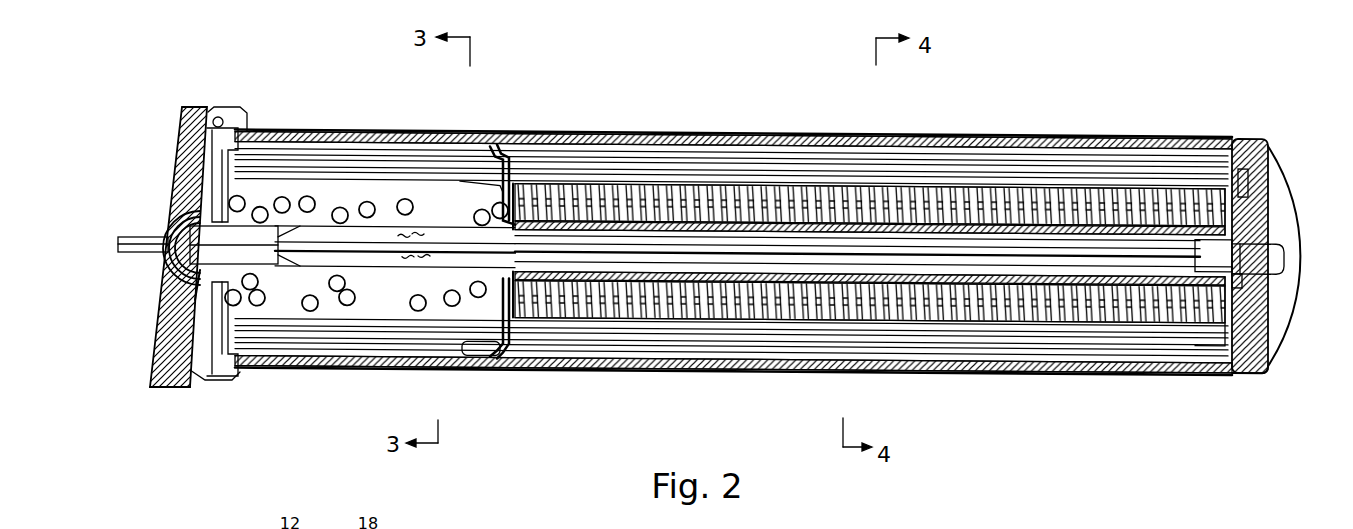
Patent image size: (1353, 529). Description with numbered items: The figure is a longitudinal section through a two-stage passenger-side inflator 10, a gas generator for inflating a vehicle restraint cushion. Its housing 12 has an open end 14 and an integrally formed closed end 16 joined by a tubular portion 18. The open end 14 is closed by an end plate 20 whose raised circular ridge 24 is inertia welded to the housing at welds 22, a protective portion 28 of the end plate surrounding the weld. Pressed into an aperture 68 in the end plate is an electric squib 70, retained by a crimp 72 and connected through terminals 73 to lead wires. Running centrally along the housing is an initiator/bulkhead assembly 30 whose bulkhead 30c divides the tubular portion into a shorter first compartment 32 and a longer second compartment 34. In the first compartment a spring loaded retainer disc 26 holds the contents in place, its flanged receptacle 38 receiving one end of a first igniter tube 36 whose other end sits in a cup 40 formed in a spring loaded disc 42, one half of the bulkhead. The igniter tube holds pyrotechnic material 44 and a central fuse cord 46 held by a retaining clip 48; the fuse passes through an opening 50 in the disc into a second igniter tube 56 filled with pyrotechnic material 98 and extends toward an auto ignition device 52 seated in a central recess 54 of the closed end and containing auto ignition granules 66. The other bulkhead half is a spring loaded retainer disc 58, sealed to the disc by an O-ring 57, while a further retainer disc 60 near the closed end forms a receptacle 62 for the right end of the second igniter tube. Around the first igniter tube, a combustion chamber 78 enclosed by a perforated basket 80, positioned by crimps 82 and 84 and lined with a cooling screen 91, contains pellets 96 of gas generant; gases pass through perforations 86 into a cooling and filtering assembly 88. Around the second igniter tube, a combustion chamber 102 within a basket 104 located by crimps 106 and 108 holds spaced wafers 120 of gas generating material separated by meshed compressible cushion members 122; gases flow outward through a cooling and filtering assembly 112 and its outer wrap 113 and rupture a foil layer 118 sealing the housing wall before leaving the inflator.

The gas generator 10 is at (663, 118).
The housing 12 is at (1022, 135).
The open end 14 is at (168, 354).
The closed end 16 is at (1254, 143).
The tubular portion 18 is at (912, 134).
The end plate 20 is at (160, 379).
The welds 22 is at (221, 118).
The raised circular ridge 24 is at (216, 132).
The spring loaded retainer disc 26 is at (245, 123).
The protective portion 28 is at (220, 380).
The initiator/bulkhead assembly 30 is at (322, 181).
The bulkhead 30c is at (474, 352).
The first cylindrical inflator compartment 32 is at (350, 150).
The second cylindrical inflator compartment 34 is at (706, 152).
The first igniter tube 36 is at (380, 270).
The receptacle 38 is at (265, 297).
The cup 40 is at (486, 224).
The spring loaded disc 42 is at (475, 187).
The igniter material 44 is at (422, 257).
The fuse cord 46 is at (383, 245).
The retaining clip 48 is at (303, 237).
The opening 50 is at (483, 293).
The auto ignition device 52 is at (1242, 253).
The central recess 54 is at (1262, 226).
The second igniter tube 56 is at (1003, 265).
The O-ring 57 is at (515, 158).
The spring loaded retainer disc 58 is at (520, 190).
The spring loaded retainer disc 60 is at (1248, 185).
The receptacle 62 is at (1240, 349).
The auto ignition granules 66 is at (1240, 283).
The aperture 68 is at (190, 262).
The electric squib 70 is at (172, 226).
The crimp 72 is at (178, 283).
The terminals 73 is at (133, 247).
The combustion chamber 78 is at (393, 308).
The perforated basket 80 is at (410, 172).
The crimp 82 is at (222, 337).
The crimp 84 is at (488, 278).
The perforations 86 is at (427, 323).
The cooling and filtering assembly 88 is at (298, 336).
The cooling screen 91 is at (282, 303).
The pellets 96 is at (335, 289).
The pyrotechnic material 98 is at (763, 245).
The combustion chamber 102 is at (672, 312).
The perforated basket 104 is at (627, 321).
The crimp 106 is at (520, 360).
The crimp 108 is at (1212, 344).
The cooling and filtering assembly 112 is at (817, 347).
The wrap 113 is at (940, 356).
The layer 118 is at (1088, 366).
The wafers 120 is at (858, 190).
The cushion members 122 is at (965, 186).